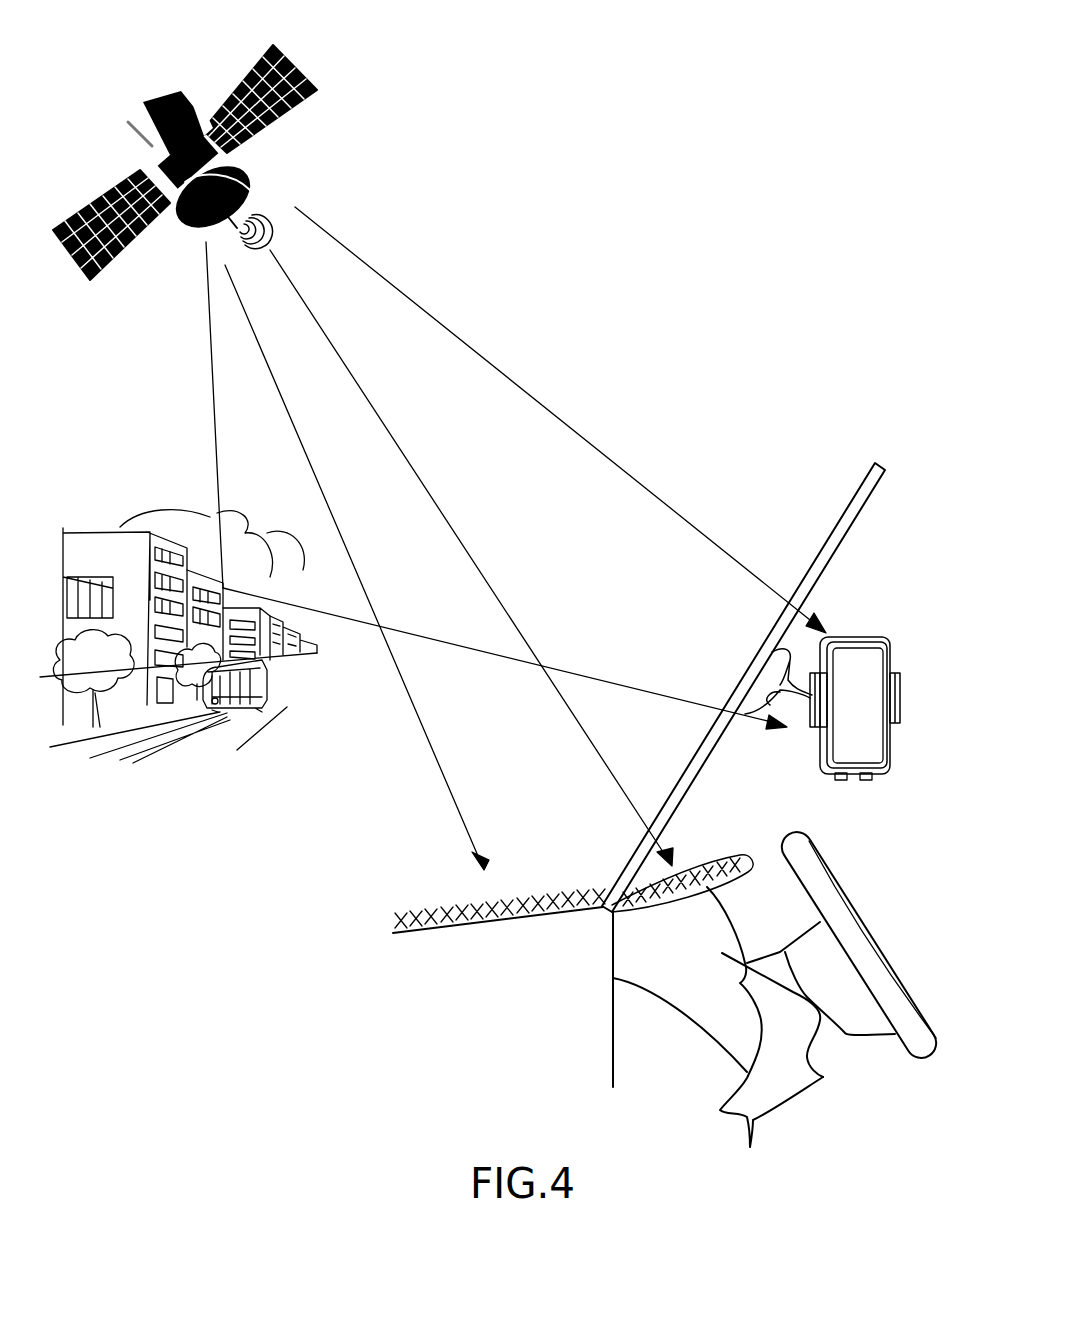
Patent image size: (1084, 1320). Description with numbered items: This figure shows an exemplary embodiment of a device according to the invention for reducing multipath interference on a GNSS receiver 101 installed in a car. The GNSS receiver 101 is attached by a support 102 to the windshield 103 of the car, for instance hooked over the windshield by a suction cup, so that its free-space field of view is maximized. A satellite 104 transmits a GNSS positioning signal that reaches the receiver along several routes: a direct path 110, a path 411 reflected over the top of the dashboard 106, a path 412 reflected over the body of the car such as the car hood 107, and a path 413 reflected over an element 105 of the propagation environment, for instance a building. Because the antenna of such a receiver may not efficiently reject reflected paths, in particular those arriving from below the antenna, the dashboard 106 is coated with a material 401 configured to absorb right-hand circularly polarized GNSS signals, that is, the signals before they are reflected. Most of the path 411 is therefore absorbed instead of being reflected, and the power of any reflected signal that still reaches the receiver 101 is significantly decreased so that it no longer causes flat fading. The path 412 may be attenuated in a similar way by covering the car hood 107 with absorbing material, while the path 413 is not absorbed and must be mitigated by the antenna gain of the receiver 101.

The GNSS receiver 101 is at (860, 672).
The support 102 is at (900, 698).
The windshield 103 is at (862, 485).
The satellite 104 is at (305, 67).
The element of the propagation environment 105 is at (97, 532).
The dashboard 106 is at (823, 1077).
The car hood 107 is at (460, 930).
The direct path 110 is at (560, 413).
The absorbing material 401 is at (427, 903).
The path reflected over the dashboard 411 is at (400, 447).
The path reflected over the body of the car 412 is at (333, 522).
The path reflected over the environment element 413 is at (209, 381).